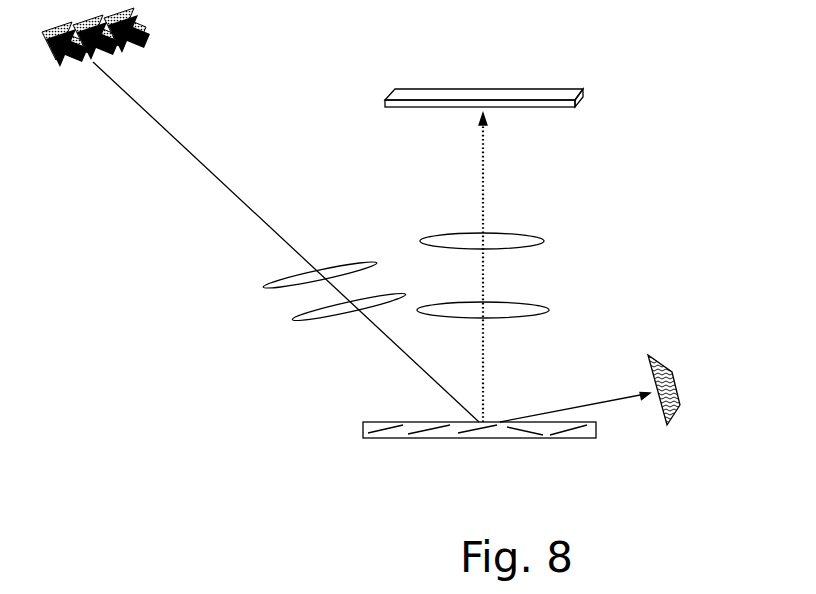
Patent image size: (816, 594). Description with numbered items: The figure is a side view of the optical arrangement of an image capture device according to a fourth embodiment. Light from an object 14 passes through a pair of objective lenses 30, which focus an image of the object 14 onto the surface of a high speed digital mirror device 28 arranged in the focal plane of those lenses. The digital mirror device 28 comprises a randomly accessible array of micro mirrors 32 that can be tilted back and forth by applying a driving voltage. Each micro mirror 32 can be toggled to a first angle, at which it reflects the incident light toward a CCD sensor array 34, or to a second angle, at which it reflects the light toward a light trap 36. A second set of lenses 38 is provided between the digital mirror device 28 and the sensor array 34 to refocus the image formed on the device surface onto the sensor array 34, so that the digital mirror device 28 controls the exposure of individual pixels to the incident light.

The object 14 is at (137, 26).
The digital mirror device 28 is at (590, 437).
The objective lenses 30 is at (253, 291).
The micro mirrors 32 is at (465, 432).
The CCD sensor array 34 is at (585, 93).
The light trap 36 is at (678, 387).
The second set of lenses 38 is at (548, 240).